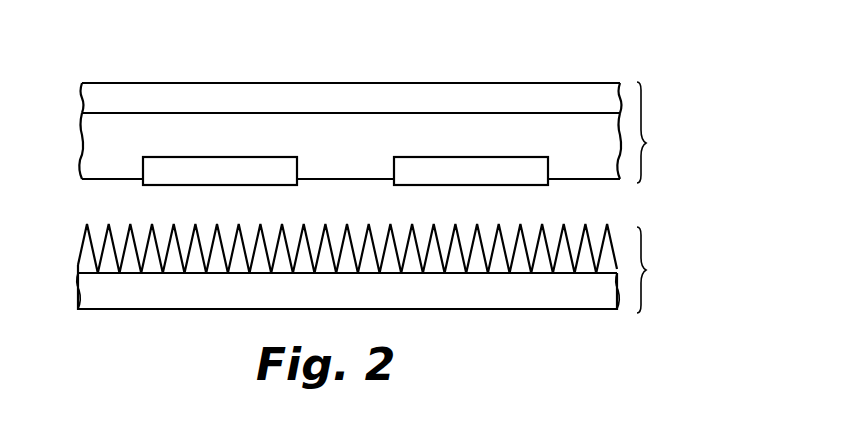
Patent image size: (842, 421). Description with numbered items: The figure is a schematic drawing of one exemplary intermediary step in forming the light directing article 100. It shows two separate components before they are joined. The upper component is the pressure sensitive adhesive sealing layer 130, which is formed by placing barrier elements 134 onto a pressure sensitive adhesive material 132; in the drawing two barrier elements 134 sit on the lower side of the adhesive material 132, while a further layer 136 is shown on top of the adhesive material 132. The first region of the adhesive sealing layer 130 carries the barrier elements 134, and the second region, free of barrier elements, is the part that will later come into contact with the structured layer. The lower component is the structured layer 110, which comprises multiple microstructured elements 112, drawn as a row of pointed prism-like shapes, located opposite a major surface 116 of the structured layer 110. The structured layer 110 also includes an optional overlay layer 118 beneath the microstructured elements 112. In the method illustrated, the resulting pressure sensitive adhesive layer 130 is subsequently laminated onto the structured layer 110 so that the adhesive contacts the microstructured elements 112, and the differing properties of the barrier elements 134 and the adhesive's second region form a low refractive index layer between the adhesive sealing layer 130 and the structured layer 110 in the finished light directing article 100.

The light directing article 100 is at (350, 194).
The structured layer 110 is at (350, 294).
The microstructured elements 112 is at (195, 262).
The major surface 116 is at (522, 273).
The overlay layer 118 is at (90, 296).
The adhesive sealing layer 130 is at (352, 112).
The pressure sensitive adhesive material 132 is at (97, 137).
The barrier elements 134 is at (210, 165).
The backing layer 136 is at (97, 99).